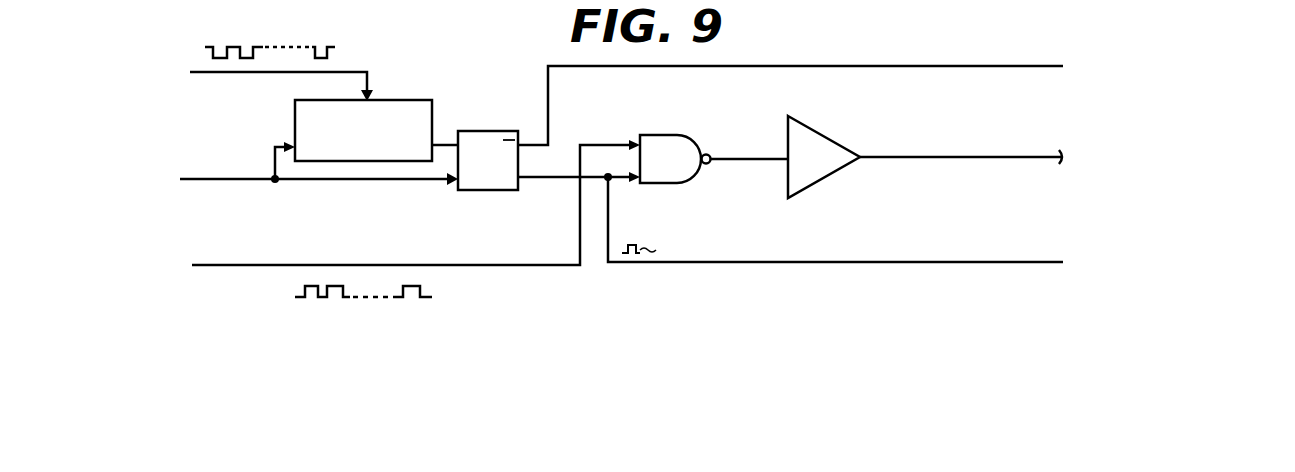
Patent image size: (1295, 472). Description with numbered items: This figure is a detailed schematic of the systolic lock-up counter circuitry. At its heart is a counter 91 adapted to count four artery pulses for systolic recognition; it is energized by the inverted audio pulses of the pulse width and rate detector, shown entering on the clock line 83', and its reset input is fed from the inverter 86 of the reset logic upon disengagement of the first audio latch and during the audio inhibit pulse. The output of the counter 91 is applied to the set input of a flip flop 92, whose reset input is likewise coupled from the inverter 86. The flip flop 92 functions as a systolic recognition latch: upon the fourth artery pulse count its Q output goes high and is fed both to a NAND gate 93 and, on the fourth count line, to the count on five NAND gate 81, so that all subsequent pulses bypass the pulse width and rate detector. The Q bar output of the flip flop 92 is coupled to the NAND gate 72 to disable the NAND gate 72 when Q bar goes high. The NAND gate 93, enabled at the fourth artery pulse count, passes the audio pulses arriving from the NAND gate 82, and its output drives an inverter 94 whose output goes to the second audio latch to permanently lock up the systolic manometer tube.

The clock pulse input line 83' is at (260, 74).
The inverter 86 is at (180, 171).
The NAND gate 82 is at (192, 257).
The counter 91 is at (432, 100).
The flip flop 92 is at (517, 131).
The NAND gate 93 is at (680, 170).
The inverter 94 is at (853, 151).
The NAND gate 72 is at (1059, 59).
The count on five NAND gate 81 is at (1059, 255).